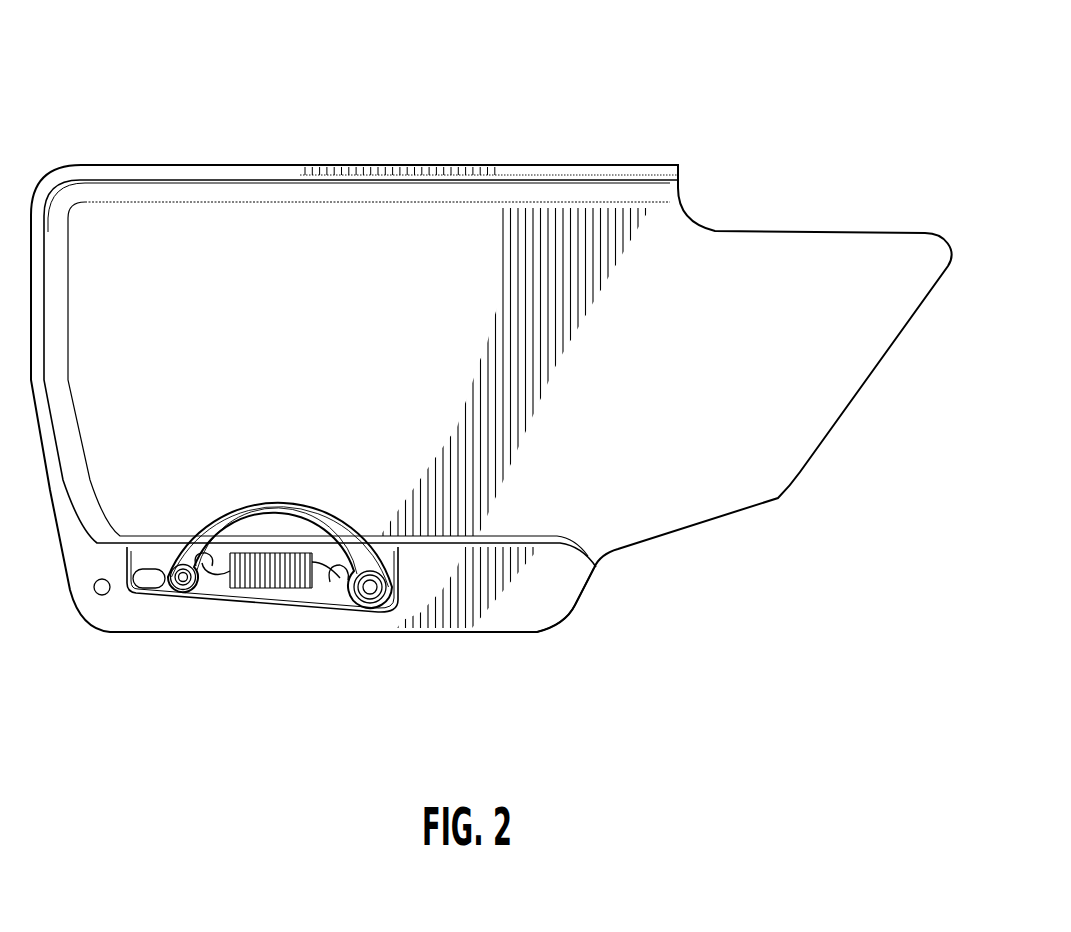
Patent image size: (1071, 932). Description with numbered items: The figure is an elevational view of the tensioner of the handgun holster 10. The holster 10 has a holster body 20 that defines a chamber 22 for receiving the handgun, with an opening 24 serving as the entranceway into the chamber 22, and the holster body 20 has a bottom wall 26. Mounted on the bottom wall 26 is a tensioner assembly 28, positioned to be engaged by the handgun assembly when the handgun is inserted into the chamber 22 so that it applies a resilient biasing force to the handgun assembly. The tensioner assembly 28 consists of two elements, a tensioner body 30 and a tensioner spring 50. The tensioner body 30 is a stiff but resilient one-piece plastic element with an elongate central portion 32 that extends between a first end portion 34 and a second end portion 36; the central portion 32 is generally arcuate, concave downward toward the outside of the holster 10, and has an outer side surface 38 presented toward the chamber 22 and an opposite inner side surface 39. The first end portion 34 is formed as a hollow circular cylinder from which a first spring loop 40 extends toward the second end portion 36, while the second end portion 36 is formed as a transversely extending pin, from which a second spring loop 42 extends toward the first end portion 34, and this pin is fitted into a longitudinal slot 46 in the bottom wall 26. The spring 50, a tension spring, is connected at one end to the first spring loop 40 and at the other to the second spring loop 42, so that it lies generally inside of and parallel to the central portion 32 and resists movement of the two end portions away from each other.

The handgun holster 10 is at (491, 358).
The holster body 20 is at (513, 163).
The chamber 22 is at (385, 348).
The opening 24 is at (841, 400).
The bottom wall 26 is at (557, 632).
The tensioner assembly 28 is at (259, 618).
The tensioner body 30 is at (307, 553).
The central portion 32 is at (356, 504).
The first end portion 34 is at (380, 567).
The second end portion 36 is at (173, 560).
The outer side surface 38 is at (267, 556).
The inner side surface 39 is at (245, 587).
The first spring loop 40 is at (333, 597).
The second spring loop 42 is at (210, 582).
The slot 46 is at (145, 580).
The tensioner spring 50 is at (273, 590).